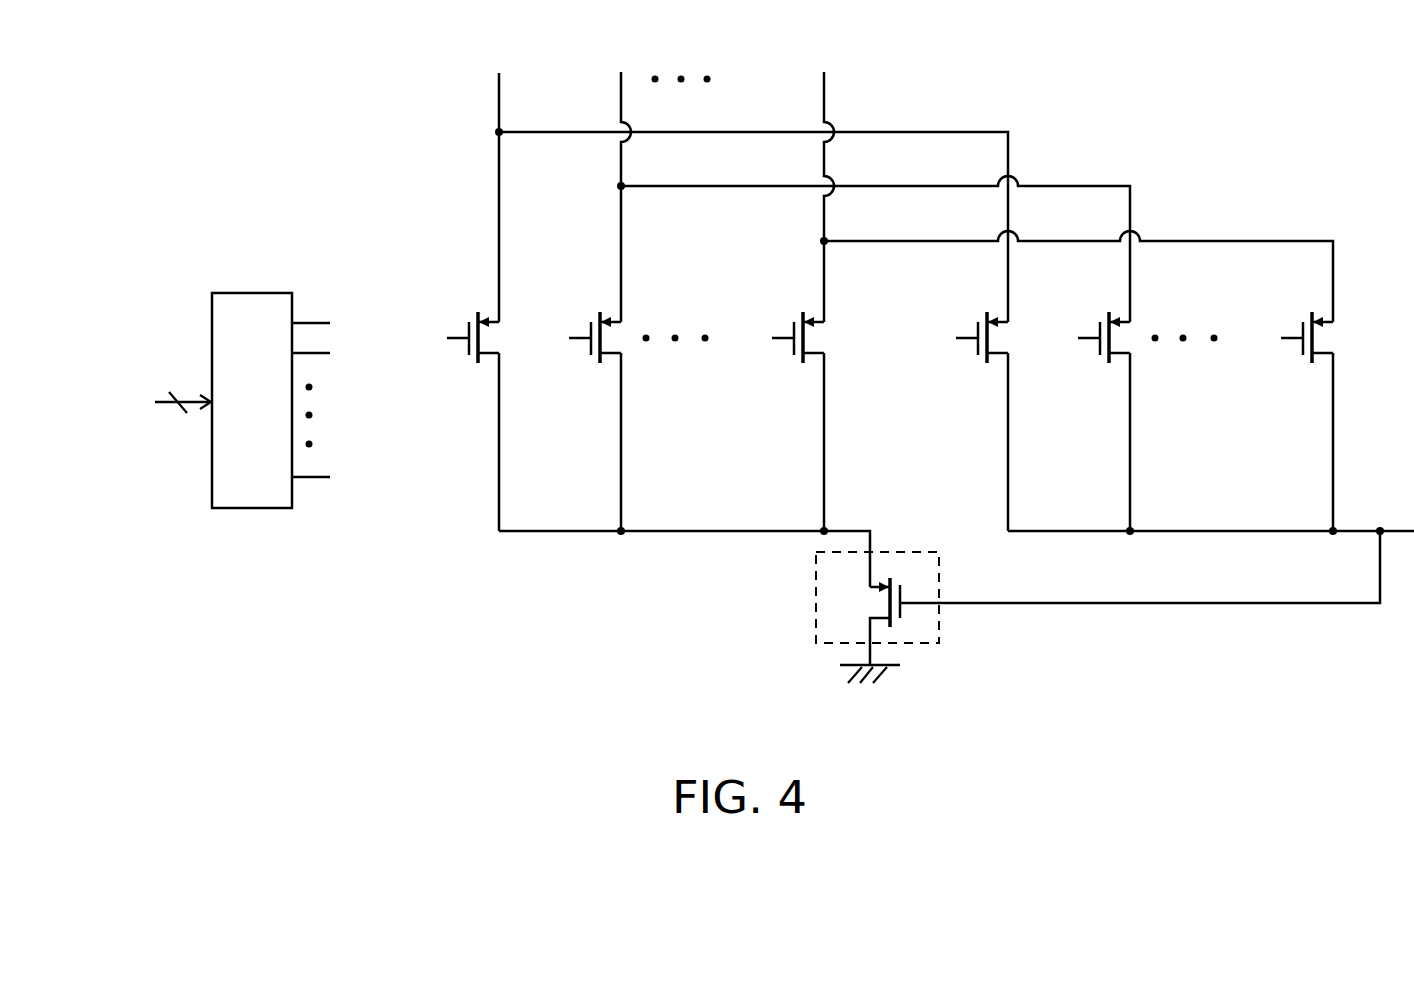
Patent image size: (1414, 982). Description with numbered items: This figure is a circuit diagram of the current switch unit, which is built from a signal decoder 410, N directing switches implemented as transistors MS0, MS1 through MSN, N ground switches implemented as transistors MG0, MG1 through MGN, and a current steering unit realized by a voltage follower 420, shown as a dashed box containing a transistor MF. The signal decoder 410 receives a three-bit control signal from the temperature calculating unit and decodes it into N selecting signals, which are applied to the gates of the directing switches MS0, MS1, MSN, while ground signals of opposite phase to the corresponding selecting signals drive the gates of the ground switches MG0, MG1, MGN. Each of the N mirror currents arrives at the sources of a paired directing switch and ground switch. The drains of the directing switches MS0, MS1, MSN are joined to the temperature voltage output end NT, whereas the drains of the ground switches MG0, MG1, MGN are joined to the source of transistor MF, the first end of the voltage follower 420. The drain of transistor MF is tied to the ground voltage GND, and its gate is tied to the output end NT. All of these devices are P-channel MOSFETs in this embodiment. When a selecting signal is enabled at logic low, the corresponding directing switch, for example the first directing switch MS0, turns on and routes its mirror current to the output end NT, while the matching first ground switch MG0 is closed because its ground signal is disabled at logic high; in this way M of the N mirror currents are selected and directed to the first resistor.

The signal decoder 410 is at (219, 377).
The voltage follower 420 is at (890, 612).
The transistor MF is at (868, 621).
The ground switch MG0 is at (450, 320).
The ground switch MG1 is at (574, 320).
The ground switch MGN is at (774, 320).
The directing switch MS0 is at (967, 320).
The directing switch MS1 is at (1091, 320).
The directing switch MSN is at (1282, 320).
The temperature voltage output end NT is at (1380, 527).
The ground voltage GND is at (870, 692).